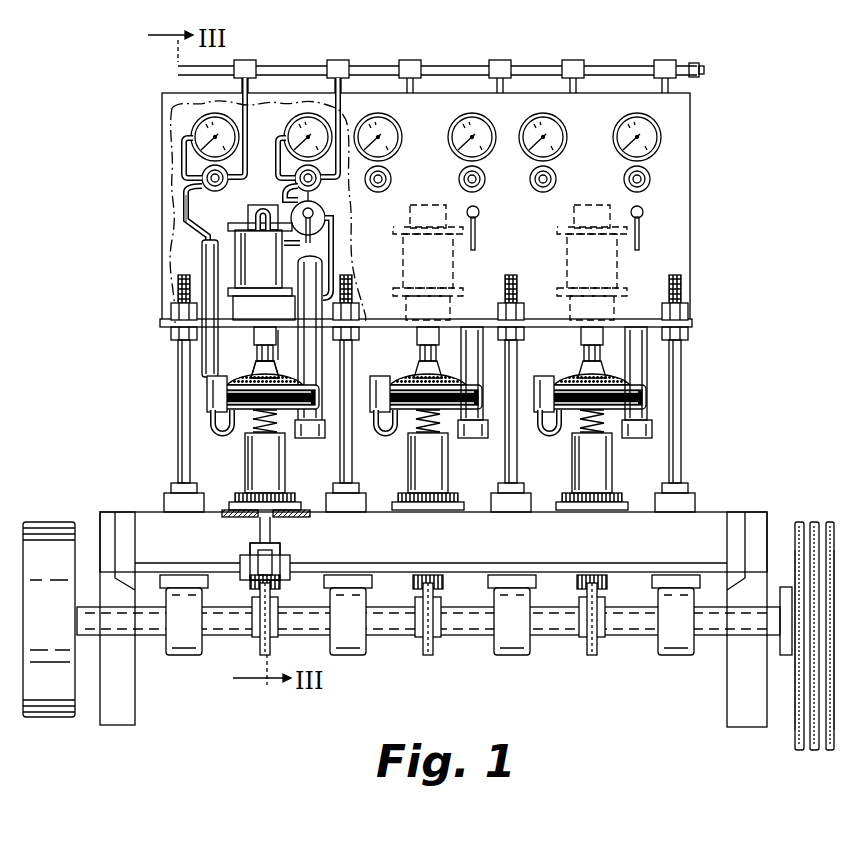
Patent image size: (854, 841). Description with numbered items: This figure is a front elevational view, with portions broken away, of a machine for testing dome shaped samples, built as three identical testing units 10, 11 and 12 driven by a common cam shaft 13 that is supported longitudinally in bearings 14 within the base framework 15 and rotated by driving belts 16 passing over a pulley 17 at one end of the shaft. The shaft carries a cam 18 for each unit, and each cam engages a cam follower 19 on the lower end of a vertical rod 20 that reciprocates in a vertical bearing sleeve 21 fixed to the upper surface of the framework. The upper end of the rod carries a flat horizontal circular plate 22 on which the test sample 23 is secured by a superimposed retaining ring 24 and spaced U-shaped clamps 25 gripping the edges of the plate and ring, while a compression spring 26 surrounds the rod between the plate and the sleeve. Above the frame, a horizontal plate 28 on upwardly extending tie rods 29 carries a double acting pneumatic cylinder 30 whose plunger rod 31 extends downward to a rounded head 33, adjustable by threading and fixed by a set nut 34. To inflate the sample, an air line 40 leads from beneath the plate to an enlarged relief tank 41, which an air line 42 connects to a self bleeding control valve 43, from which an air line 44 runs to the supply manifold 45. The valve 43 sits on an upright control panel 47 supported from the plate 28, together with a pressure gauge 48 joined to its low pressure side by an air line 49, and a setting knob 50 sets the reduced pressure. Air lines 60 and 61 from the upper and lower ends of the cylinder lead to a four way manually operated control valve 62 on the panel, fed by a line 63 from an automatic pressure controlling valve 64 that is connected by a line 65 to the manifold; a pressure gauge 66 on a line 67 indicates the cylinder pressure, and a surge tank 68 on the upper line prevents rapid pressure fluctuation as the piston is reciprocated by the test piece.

The testing unit 10 is at (229, 445).
The testing unit 11 is at (398, 450).
The testing unit 12 is at (565, 448).
The cam shaft 13 is at (463, 620).
The bearings 14 is at (188, 636).
The base framework 15 is at (130, 708).
The driving belts 16 is at (800, 725).
The pulley 17 is at (783, 545).
The cam 18 is at (270, 642).
The cam follower 19 is at (266, 563).
The vertical rod 20 is at (258, 532).
The vertical bearing sleeve 21 is at (285, 466).
The flat horizontal circular plate 22 is at (208, 400).
The test sample 23 is at (250, 363).
The retaining ring 24 is at (212, 388).
The U-shaped clamps 25 is at (233, 380).
The compression spring 26 is at (252, 424).
The horizontal plate 28 is at (362, 332).
The tie rods 29 is at (180, 452).
The double acting pneumatic cylinder 30 is at (192, 268).
The plunger rod 31 is at (290, 346).
The rounded head 33 is at (247, 368).
The set nut 34 is at (262, 335).
The air line 40 is at (207, 427).
The relief tank 41 is at (204, 260).
The air line 42 is at (184, 204).
The control valve 43 is at (203, 170).
The air line 44 is at (247, 122).
The supply manifold 45 is at (487, 66).
The control panel 47 is at (167, 108).
The pressure gauge 48 is at (200, 127).
The air line 49 is at (186, 145).
The setting knob 50 is at (203, 188).
The air line 60 is at (260, 250).
The air line 61 is at (326, 266).
The four way manually operated control valve 62 is at (332, 224).
The line 63 is at (283, 193).
The automatic pressure controlling valve 64 is at (340, 188).
The line 65 is at (340, 142).
The pressure gauge 66 is at (275, 153).
The line 67 is at (304, 118).
The surge tank 68 is at (320, 440).